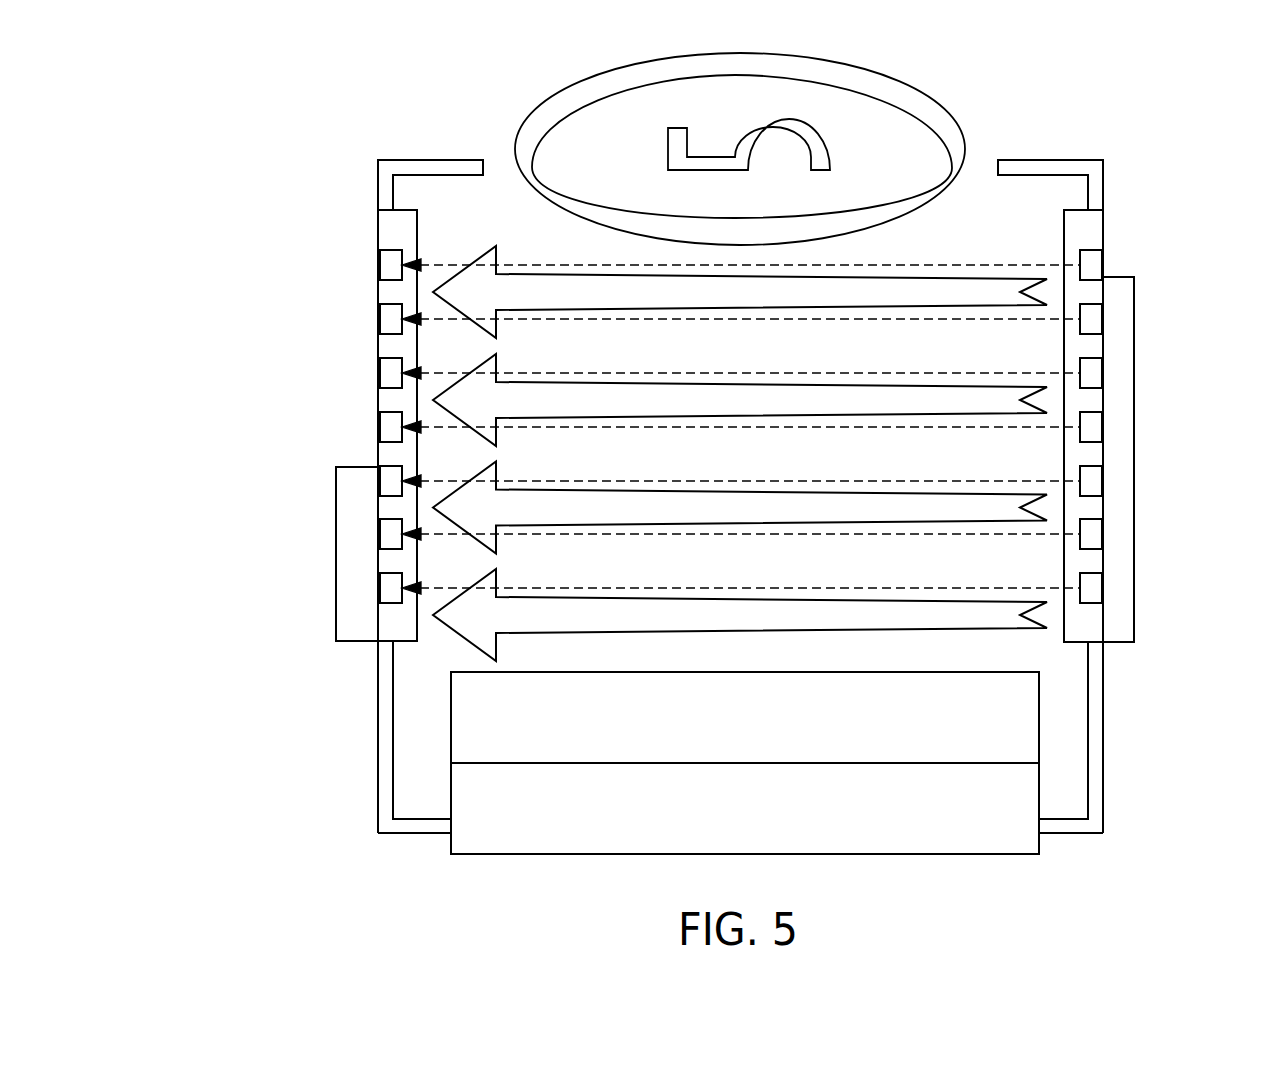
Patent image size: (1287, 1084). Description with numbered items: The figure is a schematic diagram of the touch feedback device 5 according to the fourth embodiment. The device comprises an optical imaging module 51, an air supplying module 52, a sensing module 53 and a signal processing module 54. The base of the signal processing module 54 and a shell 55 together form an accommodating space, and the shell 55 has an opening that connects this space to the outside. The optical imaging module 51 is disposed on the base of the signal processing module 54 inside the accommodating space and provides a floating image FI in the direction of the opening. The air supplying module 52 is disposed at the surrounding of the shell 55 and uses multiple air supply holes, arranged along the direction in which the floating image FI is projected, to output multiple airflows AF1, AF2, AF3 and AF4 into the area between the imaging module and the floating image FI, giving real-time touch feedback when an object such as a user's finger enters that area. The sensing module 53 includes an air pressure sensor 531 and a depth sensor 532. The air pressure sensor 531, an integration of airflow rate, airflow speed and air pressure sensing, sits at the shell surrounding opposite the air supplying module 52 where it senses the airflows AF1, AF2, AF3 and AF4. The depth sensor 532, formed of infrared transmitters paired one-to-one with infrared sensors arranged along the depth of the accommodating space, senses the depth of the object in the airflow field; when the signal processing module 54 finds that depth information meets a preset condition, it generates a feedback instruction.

The touch feedback device 5 is at (176, 82).
The floating image FI is at (965, 132).
The optical imaging module 51 is at (1039, 717).
The air supplying module 52 is at (1136, 302).
The sensing module 53 is at (706, 420).
The air pressure sensor 531 is at (311, 554).
The depth sensor 532 is at (378, 402).
The signal processing module 54 is at (1039, 792).
The shell 55 is at (378, 737).
The airflow AF1 is at (489, 250).
The airflow AF2 is at (1027, 387).
The airflow AF3 is at (1027, 494).
The airflow AF4 is at (1027, 602).